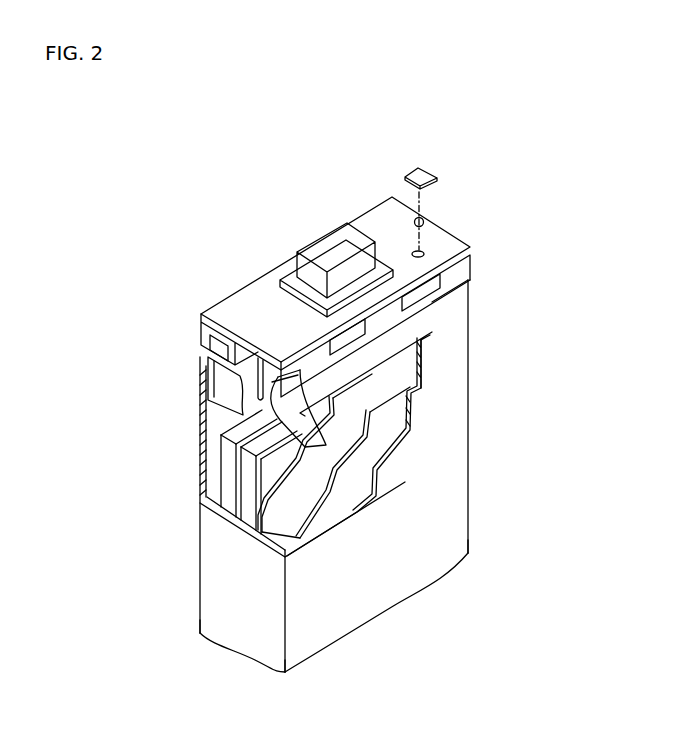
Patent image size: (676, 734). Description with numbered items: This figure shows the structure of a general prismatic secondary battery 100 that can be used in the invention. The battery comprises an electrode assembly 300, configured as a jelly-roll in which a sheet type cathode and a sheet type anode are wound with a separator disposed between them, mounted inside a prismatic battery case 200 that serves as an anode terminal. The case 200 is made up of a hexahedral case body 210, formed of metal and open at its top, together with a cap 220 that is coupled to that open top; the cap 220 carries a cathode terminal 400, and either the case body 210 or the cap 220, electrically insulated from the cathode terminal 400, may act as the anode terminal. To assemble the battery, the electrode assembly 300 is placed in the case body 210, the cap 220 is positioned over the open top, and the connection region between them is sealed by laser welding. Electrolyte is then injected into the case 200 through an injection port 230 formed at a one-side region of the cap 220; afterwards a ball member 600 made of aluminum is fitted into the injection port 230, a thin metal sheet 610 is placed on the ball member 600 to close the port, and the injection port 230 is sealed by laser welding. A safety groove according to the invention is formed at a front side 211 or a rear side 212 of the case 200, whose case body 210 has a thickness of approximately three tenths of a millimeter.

The prismatic secondary battery 100 is at (143, 231).
The prismatic battery case 200 is at (487, 440).
The hexahedral case body 210 is at (443, 387).
The front side 211 is at (387, 572).
The rear side 212 is at (200, 443).
The cap 220 is at (220, 310).
The injection port 230 is at (430, 252).
The electrode assembly 300 is at (255, 520).
The cathode terminal 400 is at (327, 240).
The ball member 600 is at (424, 218).
The thin metal sheet 610 is at (425, 168).